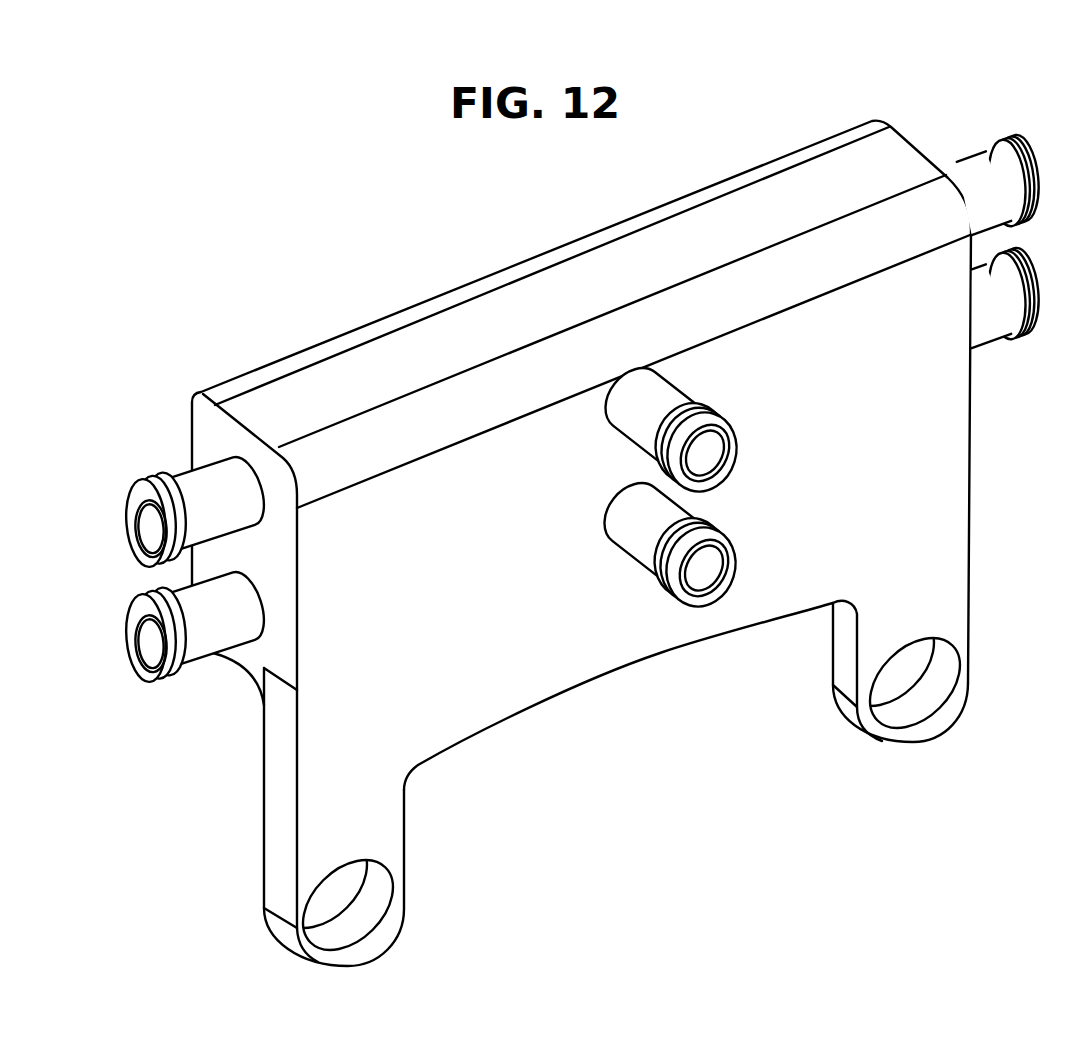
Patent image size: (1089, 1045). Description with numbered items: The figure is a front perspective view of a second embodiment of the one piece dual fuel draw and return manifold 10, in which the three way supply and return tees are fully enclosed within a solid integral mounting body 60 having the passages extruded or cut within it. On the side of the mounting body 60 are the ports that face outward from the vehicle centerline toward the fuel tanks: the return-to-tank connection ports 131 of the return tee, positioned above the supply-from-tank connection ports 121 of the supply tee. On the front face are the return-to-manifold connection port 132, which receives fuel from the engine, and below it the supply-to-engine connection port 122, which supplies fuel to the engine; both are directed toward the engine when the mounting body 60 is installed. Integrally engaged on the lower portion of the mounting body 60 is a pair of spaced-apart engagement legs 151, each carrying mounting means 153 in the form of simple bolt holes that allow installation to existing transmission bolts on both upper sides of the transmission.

The manifold 10 is at (561, 513).
The mounting body 60 is at (481, 574).
The supply-from-tank connection port 121 is at (213, 652).
The supply-to-engine connection port 122 is at (692, 510).
The return-to-tank connection port 131 is at (177, 471).
The return-to-manifold connection port 132 is at (679, 393).
The engagement legs 151 is at (368, 793).
The mounting means 153 is at (384, 908).